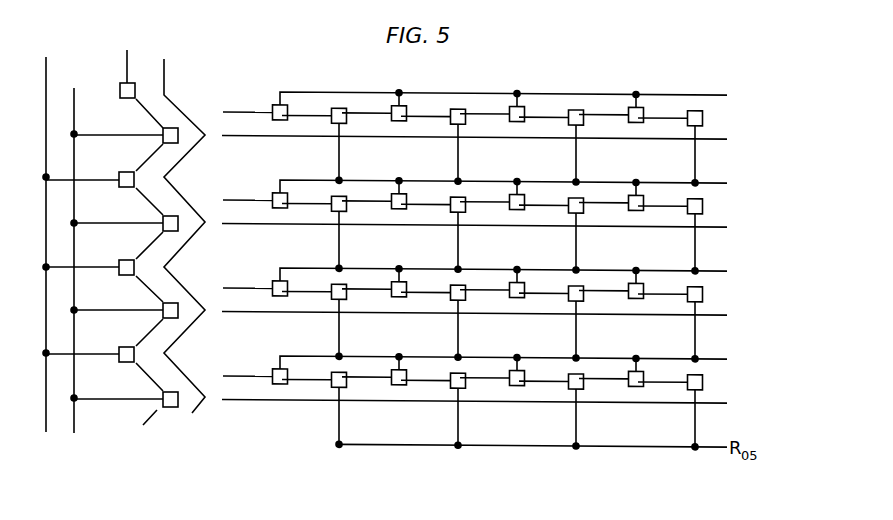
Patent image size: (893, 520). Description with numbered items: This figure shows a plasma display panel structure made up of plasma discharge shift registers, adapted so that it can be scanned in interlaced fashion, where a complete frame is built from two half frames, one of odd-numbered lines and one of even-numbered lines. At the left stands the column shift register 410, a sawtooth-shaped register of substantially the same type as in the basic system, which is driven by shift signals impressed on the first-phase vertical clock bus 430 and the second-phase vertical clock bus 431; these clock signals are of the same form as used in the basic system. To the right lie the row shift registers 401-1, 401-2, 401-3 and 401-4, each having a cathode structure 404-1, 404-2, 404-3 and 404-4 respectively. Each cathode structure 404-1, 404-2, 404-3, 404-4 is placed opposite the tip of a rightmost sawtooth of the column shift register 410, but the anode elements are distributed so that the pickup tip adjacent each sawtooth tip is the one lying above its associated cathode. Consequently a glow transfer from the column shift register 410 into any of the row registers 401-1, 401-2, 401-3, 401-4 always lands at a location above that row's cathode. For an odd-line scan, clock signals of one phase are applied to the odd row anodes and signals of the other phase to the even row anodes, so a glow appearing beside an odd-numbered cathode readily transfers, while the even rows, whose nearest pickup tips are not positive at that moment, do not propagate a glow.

The Φ2V bus 431 is at (47, 414).
The Φ1V bus 430 is at (74, 418).
The column shift register 410 is at (208, 447).
The cathode structure 404-1 is at (242, 137).
The cathode structure 404-2 is at (242, 225).
The cathode structure 404-3 is at (242, 313).
The cathode structure 404-4 is at (242, 401).
The row shift register 401-1 is at (516, 135).
The row shift register 401-2 is at (516, 223).
The row shift register 401-3 is at (516, 311).
The row shift register 401-4 is at (516, 399).